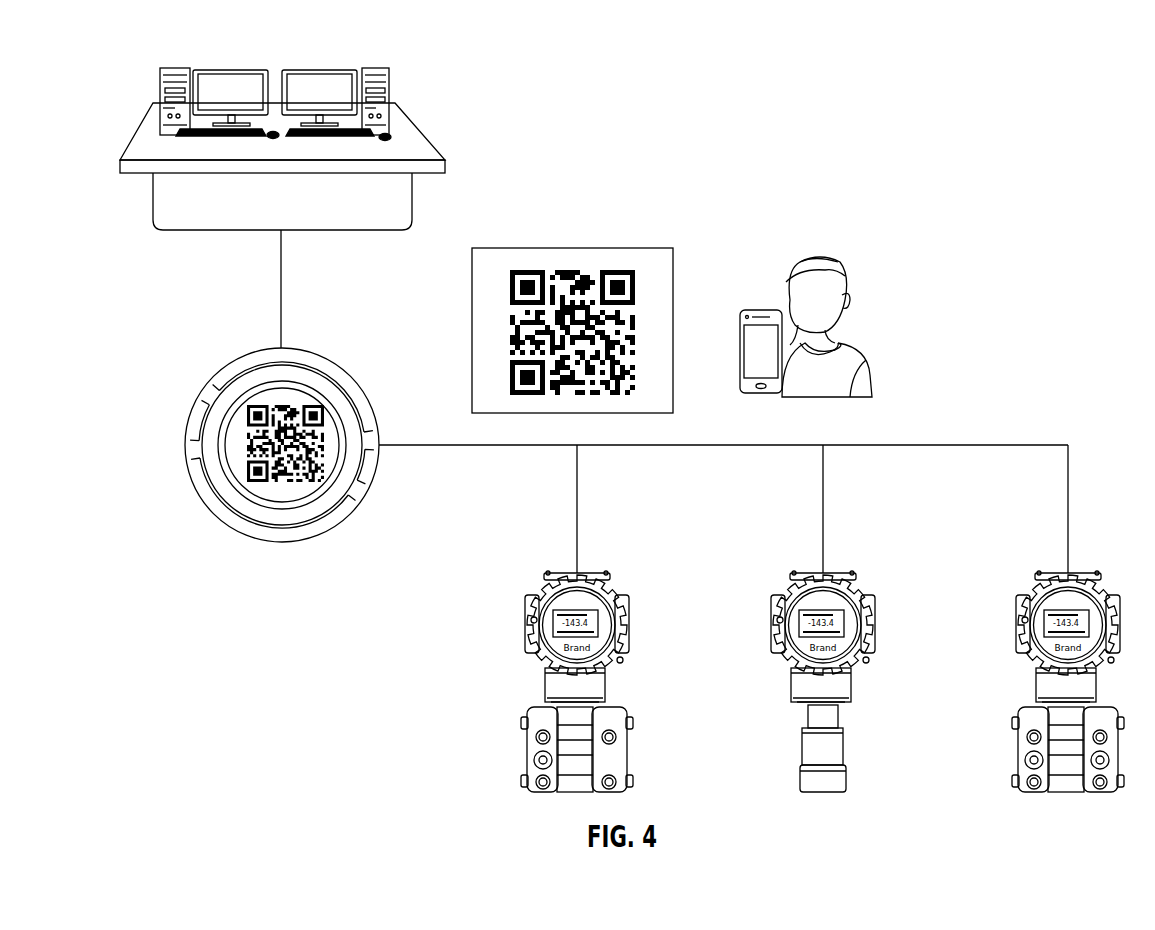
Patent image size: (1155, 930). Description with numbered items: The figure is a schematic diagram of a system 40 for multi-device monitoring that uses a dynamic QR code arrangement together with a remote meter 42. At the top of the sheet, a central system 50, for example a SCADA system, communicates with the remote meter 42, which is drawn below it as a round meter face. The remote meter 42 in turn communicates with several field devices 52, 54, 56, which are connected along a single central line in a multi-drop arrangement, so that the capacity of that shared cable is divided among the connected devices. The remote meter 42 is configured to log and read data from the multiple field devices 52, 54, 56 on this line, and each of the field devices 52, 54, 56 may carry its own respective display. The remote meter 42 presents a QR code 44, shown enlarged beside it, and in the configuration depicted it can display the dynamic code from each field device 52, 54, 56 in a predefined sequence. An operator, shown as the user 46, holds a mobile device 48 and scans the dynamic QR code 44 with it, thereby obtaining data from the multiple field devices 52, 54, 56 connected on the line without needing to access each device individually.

The system 40 is at (274, 606).
The remote meter 42 is at (327, 358).
The QR code 44 is at (633, 245).
The user 46 is at (820, 262).
The mobile device 48 is at (757, 310).
The central system 50 is at (466, 45).
The field device 52 is at (545, 690).
The field device 54 is at (791, 690).
The field device 56 is at (1037, 690).